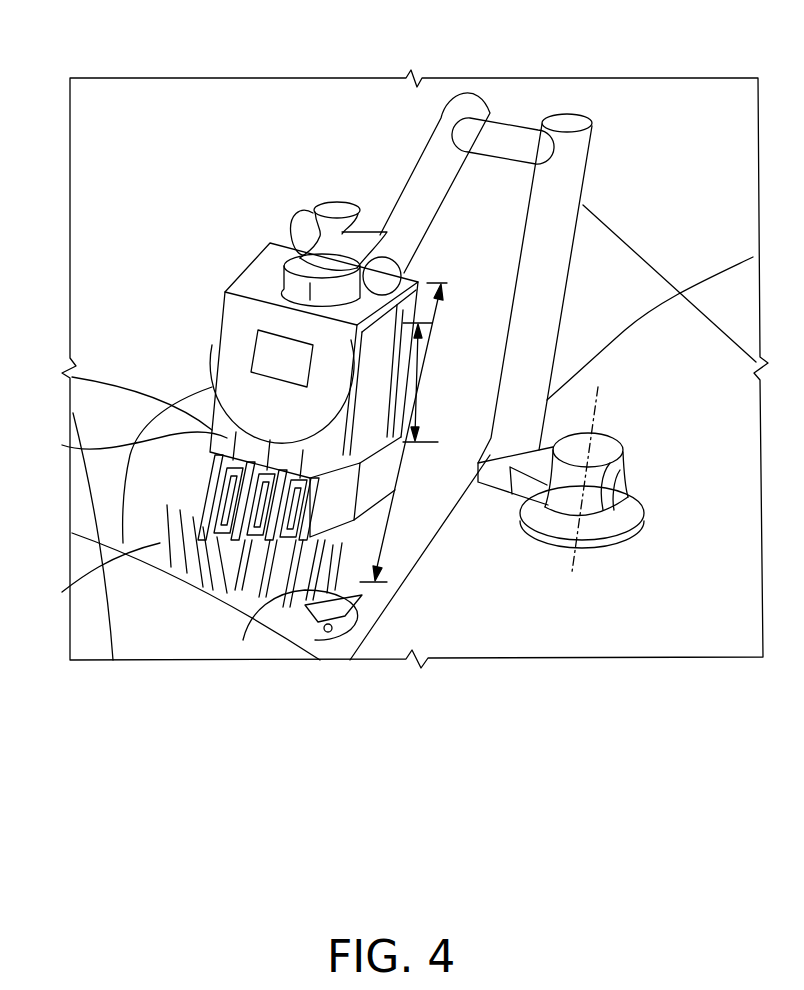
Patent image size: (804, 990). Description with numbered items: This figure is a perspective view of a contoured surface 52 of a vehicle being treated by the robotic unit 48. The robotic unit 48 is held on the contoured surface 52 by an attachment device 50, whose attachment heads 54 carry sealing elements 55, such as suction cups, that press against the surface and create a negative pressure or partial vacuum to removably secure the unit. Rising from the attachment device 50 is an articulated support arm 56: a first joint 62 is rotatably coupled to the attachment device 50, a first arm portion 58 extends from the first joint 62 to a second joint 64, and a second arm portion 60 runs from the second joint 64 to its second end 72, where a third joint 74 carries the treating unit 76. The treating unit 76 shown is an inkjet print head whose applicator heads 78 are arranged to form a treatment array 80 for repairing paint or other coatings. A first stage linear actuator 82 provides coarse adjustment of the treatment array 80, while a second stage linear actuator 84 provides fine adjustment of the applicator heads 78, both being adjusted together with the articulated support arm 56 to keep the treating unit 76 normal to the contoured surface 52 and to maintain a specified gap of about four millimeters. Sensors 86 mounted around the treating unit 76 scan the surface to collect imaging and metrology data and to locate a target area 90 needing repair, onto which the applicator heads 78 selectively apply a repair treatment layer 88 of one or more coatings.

The robotic unit 48 is at (240, 251).
The attachment device 50 is at (600, 452).
The contoured surface 52 is at (128, 623).
The attachment heads 54 is at (623, 522).
The sealing elements 55 is at (557, 535).
The articulated support arm 56 is at (604, 94).
The first arm portion 58 is at (567, 182).
The second arm portion 60 is at (444, 160).
The first joint 62 is at (508, 490).
The second joint 64 is at (497, 110).
The second end 72 is at (420, 207).
The third joint 74 is at (325, 232).
The treating unit 76 is at (270, 280).
The applicator heads 78 is at (293, 597).
The treatment array 80 is at (62, 445).
The first stage linear actuator 82 is at (433, 360).
The second stage linear actuator 84 is at (480, 462).
The sensors 86 is at (265, 355).
The repair treatment layer 88 is at (237, 577).
The target area 90 is at (62, 592).